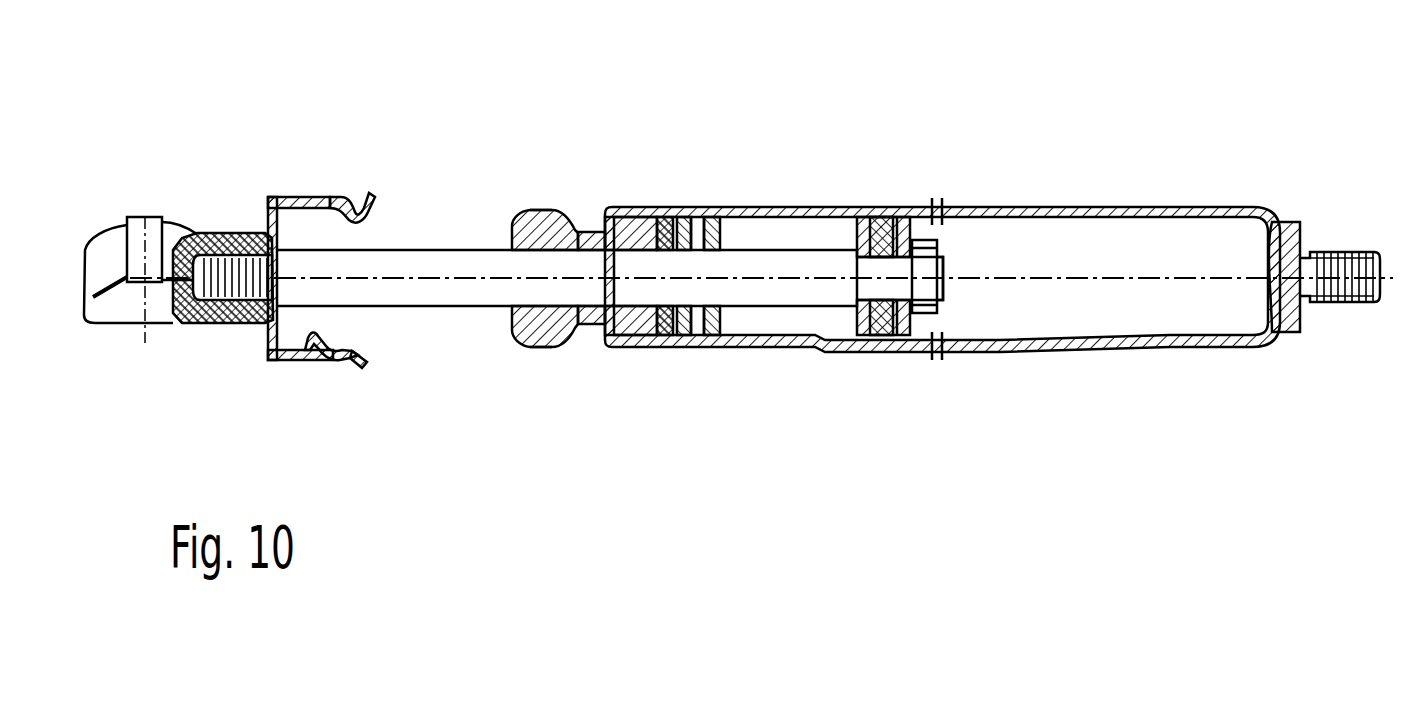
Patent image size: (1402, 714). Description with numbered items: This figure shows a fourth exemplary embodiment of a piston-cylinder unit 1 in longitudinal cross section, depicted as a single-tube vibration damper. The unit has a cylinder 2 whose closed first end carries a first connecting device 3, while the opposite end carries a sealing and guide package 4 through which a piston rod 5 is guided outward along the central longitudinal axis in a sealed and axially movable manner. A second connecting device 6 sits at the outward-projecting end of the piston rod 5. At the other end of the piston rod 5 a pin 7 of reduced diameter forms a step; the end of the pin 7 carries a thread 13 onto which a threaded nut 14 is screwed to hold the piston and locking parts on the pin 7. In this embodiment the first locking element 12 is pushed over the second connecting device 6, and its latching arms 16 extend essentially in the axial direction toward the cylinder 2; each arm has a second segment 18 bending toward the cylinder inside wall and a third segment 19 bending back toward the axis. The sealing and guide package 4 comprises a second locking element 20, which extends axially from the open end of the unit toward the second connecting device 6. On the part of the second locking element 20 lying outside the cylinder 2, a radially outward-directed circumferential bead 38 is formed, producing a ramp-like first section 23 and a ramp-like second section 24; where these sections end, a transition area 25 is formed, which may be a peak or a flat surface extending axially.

The piston-cylinder unit 1 is at (1124, 70).
The cylinder 2 is at (1160, 207).
The first connecting device 3 is at (1378, 253).
The sealing and guide package 4 is at (643, 392).
The piston rod 5 is at (392, 267).
The second connecting device 6 is at (231, 235).
The pin 7 is at (878, 265).
The first locking element 12 is at (305, 176).
The thread 13 is at (953, 258).
The threaded nut 14 is at (940, 259).
The latching arms 16 is at (271, 363).
The second segment 18 is at (308, 343).
The third segment 19 is at (367, 356).
The second locking element 20 is at (562, 353).
The first section 23 is at (522, 217).
The second section 24 is at (567, 217).
The transition area 25 is at (547, 207).
The circumferential bead 38 is at (530, 347).